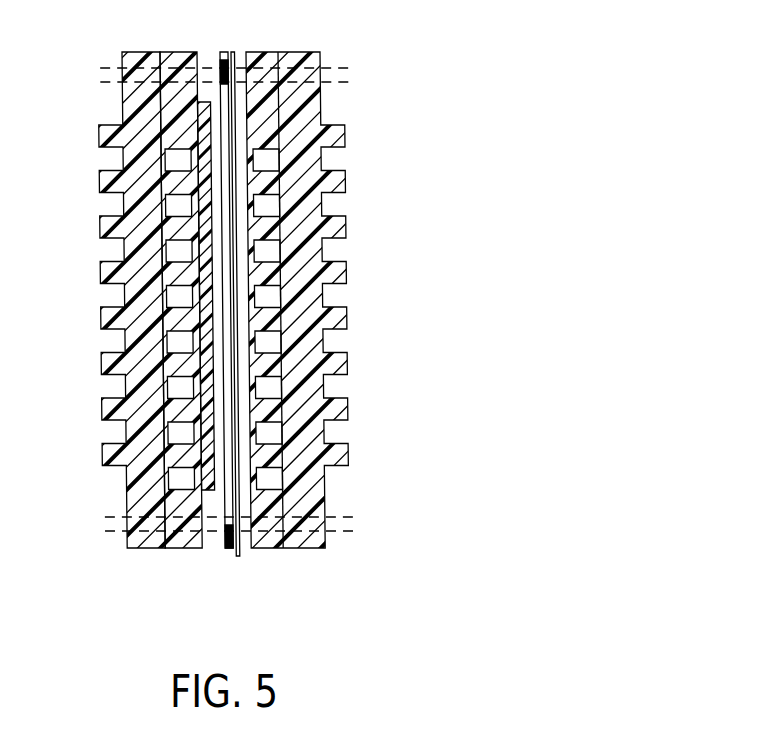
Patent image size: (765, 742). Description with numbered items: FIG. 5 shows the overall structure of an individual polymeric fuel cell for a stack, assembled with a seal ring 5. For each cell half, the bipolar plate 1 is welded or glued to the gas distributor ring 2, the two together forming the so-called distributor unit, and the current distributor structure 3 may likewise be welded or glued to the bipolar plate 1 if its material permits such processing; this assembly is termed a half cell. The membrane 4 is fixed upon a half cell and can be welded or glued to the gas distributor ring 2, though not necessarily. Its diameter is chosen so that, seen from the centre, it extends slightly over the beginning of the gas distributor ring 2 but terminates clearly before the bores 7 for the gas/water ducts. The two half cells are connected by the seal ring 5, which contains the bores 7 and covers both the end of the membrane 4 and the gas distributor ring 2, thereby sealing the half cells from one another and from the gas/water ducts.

The bipolar plate 1 is at (140, 548).
The gas distributor ring 2 is at (188, 548).
The current distributor structure 3 is at (200, 423).
The membrane 4 is at (208, 490).
The seal ring 5 is at (237, 556).
The bores 7 is at (340, 522).